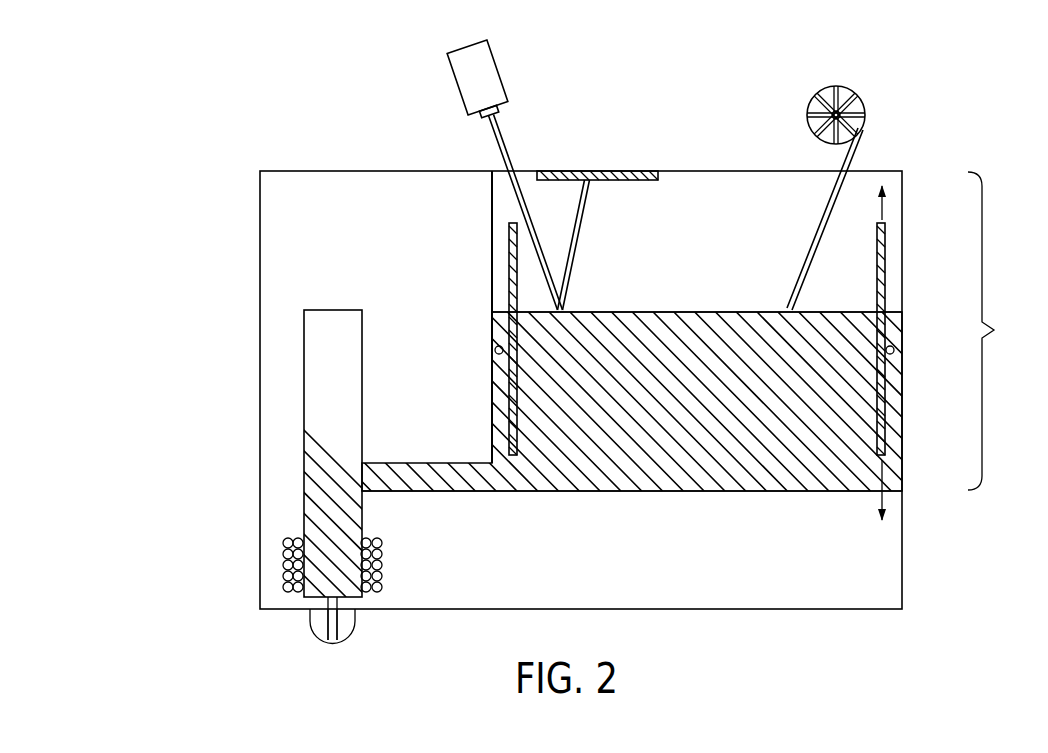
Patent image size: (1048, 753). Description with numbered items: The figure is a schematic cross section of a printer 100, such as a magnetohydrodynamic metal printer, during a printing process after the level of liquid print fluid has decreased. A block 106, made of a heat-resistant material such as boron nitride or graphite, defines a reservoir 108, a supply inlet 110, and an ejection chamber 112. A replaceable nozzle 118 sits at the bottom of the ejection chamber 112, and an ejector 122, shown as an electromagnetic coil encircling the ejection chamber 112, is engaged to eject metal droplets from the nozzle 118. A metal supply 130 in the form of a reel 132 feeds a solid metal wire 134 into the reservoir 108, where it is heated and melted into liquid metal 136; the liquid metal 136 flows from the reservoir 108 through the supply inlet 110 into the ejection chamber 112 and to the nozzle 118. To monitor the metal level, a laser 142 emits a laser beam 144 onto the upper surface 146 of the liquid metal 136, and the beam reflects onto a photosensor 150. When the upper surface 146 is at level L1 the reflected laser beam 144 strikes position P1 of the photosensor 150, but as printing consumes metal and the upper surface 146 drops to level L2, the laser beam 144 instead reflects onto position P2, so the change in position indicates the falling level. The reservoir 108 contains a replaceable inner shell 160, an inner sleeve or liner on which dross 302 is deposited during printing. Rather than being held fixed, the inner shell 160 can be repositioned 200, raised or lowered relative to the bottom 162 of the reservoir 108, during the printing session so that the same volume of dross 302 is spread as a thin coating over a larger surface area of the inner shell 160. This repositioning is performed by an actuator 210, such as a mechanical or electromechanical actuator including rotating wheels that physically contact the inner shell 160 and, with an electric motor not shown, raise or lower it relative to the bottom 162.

The printer 100 is at (200, 114).
The block 106 is at (282, 230).
The reservoir 108 is at (1000, 331).
The supply inlet 110 is at (380, 463).
The ejection chamber 112 is at (304, 490).
The nozzle 118 is at (318, 625).
The ejector 122 is at (284, 558).
The metal supply 130 is at (790, 86).
The reel 132 is at (858, 107).
The metal wire 134 is at (853, 155).
The liquid metal 136 is at (607, 455).
The laser 142 is at (453, 66).
The laser beam 144 is at (498, 153).
The upper surface 146 is at (699, 300).
The photosensor 150 is at (642, 170).
The inner shell 160 is at (510, 425).
The bottom 162 is at (737, 503).
The repositioning 200 is at (882, 205).
The actuator 210 is at (496, 350).
The dross 302 is at (520, 235).
The position P1 is at (549, 168).
The position P2 is at (595, 168).
The level L1 is at (478, 231).
The level L2 is at (478, 311).